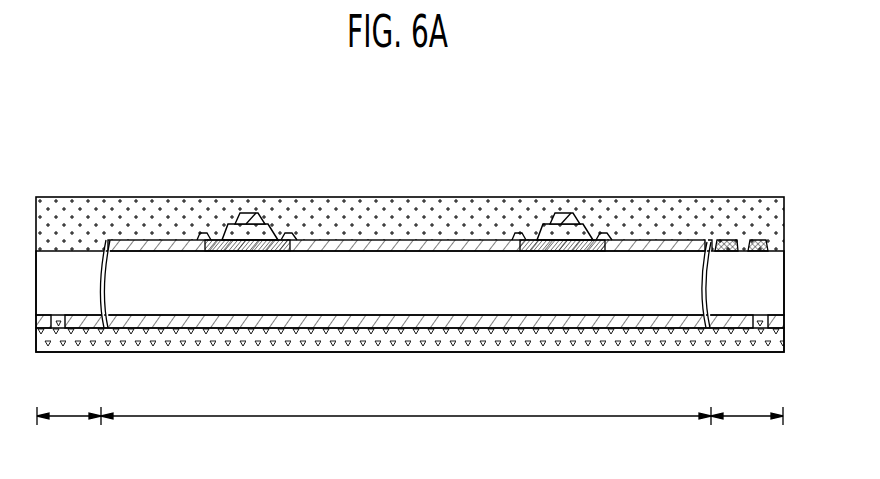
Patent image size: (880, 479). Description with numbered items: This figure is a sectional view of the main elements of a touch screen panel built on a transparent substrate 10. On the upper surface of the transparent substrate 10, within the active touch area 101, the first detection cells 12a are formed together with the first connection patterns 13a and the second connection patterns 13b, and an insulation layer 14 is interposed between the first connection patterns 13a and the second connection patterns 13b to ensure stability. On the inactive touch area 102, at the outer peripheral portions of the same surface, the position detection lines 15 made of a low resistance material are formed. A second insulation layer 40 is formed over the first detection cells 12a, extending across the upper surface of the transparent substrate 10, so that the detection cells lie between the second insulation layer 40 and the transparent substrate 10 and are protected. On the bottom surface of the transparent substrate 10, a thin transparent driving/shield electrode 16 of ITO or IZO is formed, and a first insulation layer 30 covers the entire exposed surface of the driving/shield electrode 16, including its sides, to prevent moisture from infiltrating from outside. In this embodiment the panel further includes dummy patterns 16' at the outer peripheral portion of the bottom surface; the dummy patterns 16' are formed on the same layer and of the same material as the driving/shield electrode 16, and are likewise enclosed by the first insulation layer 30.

The transparent substrate 10 is at (780, 283).
The first detection cells 12a is at (143, 240).
The first connection patterns 13a is at (280, 240).
The second connection patterns 13b is at (250, 213).
The insulation layer 14 is at (222, 240).
The position detection lines 15 is at (778, 247).
The driving/shield electrode 16 is at (423, 356).
The dummy patterns 16' is at (439, 324).
The first insulation layer 30 is at (778, 348).
The second insulation layer 40 is at (778, 212).
The active touch area 101 is at (406, 433).
The inactive touch area 102 is at (410, 430).